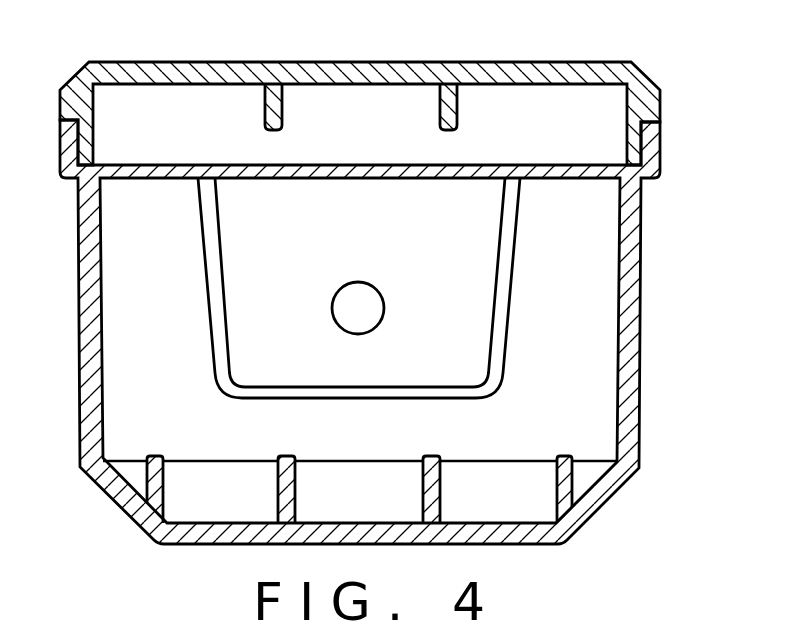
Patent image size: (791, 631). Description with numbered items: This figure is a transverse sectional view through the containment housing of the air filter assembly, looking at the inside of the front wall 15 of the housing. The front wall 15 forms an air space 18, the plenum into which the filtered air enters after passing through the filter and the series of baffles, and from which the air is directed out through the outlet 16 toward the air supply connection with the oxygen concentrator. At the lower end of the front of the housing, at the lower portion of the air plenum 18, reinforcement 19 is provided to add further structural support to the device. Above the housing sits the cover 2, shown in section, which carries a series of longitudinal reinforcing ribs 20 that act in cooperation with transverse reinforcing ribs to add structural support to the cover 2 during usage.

The cover 2 is at (523, 75).
The front wall 15 is at (127, 379).
The opening 16 is at (377, 289).
The air space 18 is at (569, 318).
The reinforcement 19 is at (158, 483).
The longitudinal reinforcing ribs 20 is at (283, 118).